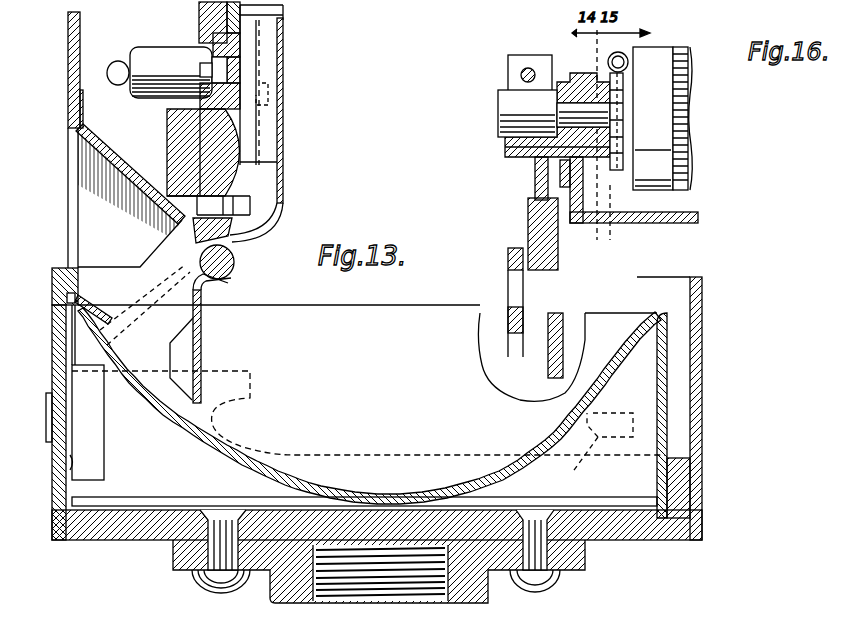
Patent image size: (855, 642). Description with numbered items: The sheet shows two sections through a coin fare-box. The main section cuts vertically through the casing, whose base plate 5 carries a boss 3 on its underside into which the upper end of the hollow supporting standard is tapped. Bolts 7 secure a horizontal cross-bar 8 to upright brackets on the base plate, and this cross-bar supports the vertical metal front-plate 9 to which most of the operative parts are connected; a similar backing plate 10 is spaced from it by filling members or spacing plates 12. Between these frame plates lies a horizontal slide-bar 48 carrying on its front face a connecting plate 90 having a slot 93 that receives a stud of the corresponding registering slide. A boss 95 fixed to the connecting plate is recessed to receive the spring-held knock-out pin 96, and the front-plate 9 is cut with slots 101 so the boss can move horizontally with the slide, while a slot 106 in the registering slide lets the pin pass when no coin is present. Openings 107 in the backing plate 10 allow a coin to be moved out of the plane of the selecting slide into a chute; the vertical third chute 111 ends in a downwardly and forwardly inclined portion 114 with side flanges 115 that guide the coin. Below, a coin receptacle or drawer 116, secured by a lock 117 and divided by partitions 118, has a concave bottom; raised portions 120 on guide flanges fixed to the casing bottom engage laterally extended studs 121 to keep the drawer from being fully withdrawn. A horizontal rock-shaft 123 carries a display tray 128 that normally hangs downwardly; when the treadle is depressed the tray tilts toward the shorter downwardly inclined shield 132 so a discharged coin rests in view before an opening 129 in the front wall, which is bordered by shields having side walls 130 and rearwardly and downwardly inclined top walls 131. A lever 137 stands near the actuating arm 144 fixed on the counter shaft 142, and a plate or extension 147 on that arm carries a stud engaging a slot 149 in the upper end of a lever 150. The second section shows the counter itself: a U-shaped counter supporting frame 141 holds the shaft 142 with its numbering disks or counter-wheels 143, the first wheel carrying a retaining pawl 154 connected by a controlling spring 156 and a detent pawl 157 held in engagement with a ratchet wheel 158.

In FIG. 13, the boss 3 is at (490, 604).
In FIG. 13, the base plate 5 is at (610, 545).
In FIG. 13, the bolts 7 is at (67, 38).
In FIG. 13, the horizontal cross-bar 8 is at (169, 124).
In FIG. 13, the front-plate 9 is at (199, 25).
In FIG. 13, the backing plate 10 is at (308, 104).
In FIG. 13, the filling members or spacing plates 12 is at (284, 10).
In FIG. 13, the slide-bar 48 is at (240, 42).
In FIG. 13, the connecting plate 90 is at (212, 88).
In FIG. 13, the slot 93 is at (215, 72).
In FIG. 13, the boss 95 is at (140, 58).
In FIG. 13, the knock-out pin 96 is at (114, 68).
In FIG. 13, the slots 101 is at (213, 42).
In FIG. 13, the slot 106 is at (240, 80).
In FIG. 13, the openings 107 is at (250, 100).
In FIG. 13, the third chute 111 is at (284, 30).
In FIG. 13, the inclined portion 114 is at (270, 224).
In FIG. 13, the side flanges 115 is at (230, 236).
In FIG. 13, the coin receptacle or drawer 116 is at (54, 270).
In FIG. 13, the lock 117 is at (104, 448).
In FIG. 13, the partitions 118 is at (522, 448).
In FIG. 13, the raised portions 120 is at (268, 386).
In FIG. 13, the laterally extended studs 121 is at (598, 452).
In FIG. 13, the rock-shaft 123 is at (232, 276).
In FIG. 13, the tray 128 is at (194, 318).
In FIG. 13, the openings 129 is at (54, 198).
In FIG. 13, the side walls 130 is at (129, 183).
In FIG. 13, the top walls 131 is at (128, 172).
In FIG. 13, the shields 132 is at (97, 300).
In FIG. 13, the lever 137 is at (556, 313).
In FIG. 16, the counter supporting frame 141 is at (650, 224).
In FIG. 16, the shaft 142 is at (558, 108).
In FIG. 16, the counter-wheels 143 is at (660, 190).
In FIG. 16, the actuating arm 144 is at (535, 180).
In FIG. 16, the plate or extension 147 is at (558, 250).
In FIG. 13, the slot 149 is at (508, 296).
In FIG. 13, the lever 150 is at (508, 255).
In FIG. 16, the retaining pawl 154 is at (612, 78).
In FIG. 16, the controlling spring 156 is at (625, 58).
In FIG. 16, the detent pawl 157 is at (675, 158).
In FIG. 16, the ratchet wheel 158 is at (625, 132).